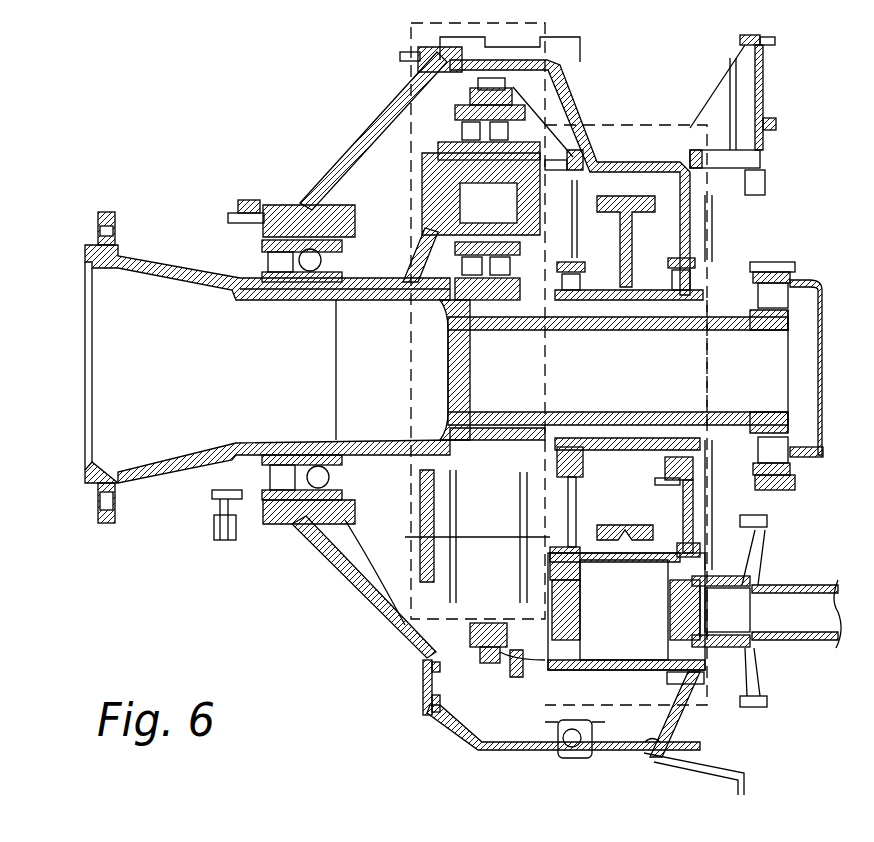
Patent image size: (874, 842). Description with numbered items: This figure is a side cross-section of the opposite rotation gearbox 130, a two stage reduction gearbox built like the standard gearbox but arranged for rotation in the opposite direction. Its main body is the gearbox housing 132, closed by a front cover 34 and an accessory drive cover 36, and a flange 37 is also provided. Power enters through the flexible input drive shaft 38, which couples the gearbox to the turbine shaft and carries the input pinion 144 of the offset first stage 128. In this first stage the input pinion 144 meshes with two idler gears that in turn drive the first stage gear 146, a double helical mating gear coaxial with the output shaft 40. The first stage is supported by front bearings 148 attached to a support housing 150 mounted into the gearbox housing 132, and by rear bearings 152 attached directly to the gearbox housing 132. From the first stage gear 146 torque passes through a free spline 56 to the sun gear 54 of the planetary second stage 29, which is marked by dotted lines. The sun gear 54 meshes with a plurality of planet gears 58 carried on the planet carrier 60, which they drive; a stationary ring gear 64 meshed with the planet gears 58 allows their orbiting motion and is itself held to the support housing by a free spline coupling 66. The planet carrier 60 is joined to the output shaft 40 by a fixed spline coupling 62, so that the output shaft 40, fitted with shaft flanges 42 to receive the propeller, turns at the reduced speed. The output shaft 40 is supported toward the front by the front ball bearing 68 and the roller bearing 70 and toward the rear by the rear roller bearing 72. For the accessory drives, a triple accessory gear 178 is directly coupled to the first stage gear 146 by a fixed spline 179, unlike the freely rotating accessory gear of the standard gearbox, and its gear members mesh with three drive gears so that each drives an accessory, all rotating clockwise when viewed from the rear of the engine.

The opposite rotation gearbox 130 is at (157, 182).
The front cover 34 is at (420, 70).
The planet gears 58 is at (432, 98).
The planet carrier 60 is at (424, 172).
The gearbox housing 132 is at (560, 88).
The accessory drive cover 36 is at (760, 80).
The first stage gear 146 is at (632, 245).
The fixed spline coupling 62 is at (380, 292).
The sun gear 54 is at (480, 300).
The free spline 56 is at (660, 300).
The offset first stage 128 is at (709, 364).
The roller bearing 70 is at (275, 472).
The rear bearings 152 is at (598, 452).
The fixed spline 179 is at (720, 470).
The rear roller bearing 72 is at (772, 448).
The front ball bearing 68 is at (325, 478).
The front bearings 148 is at (556, 547).
The triple accessory gear 178 is at (702, 532).
The planetary second stage 29 is at (362, 600).
The stationary ring gear 64 is at (424, 662).
The free spline coupling 66 is at (432, 690).
The input pinion 144 is at (649, 611).
The support housing 150 is at (522, 666).
The flexible input drive shaft 38 is at (800, 625).
The flange 37 is at (750, 775).
The output shaft 40 is at (182, 482).
The shaft flanges 42 is at (105, 525).